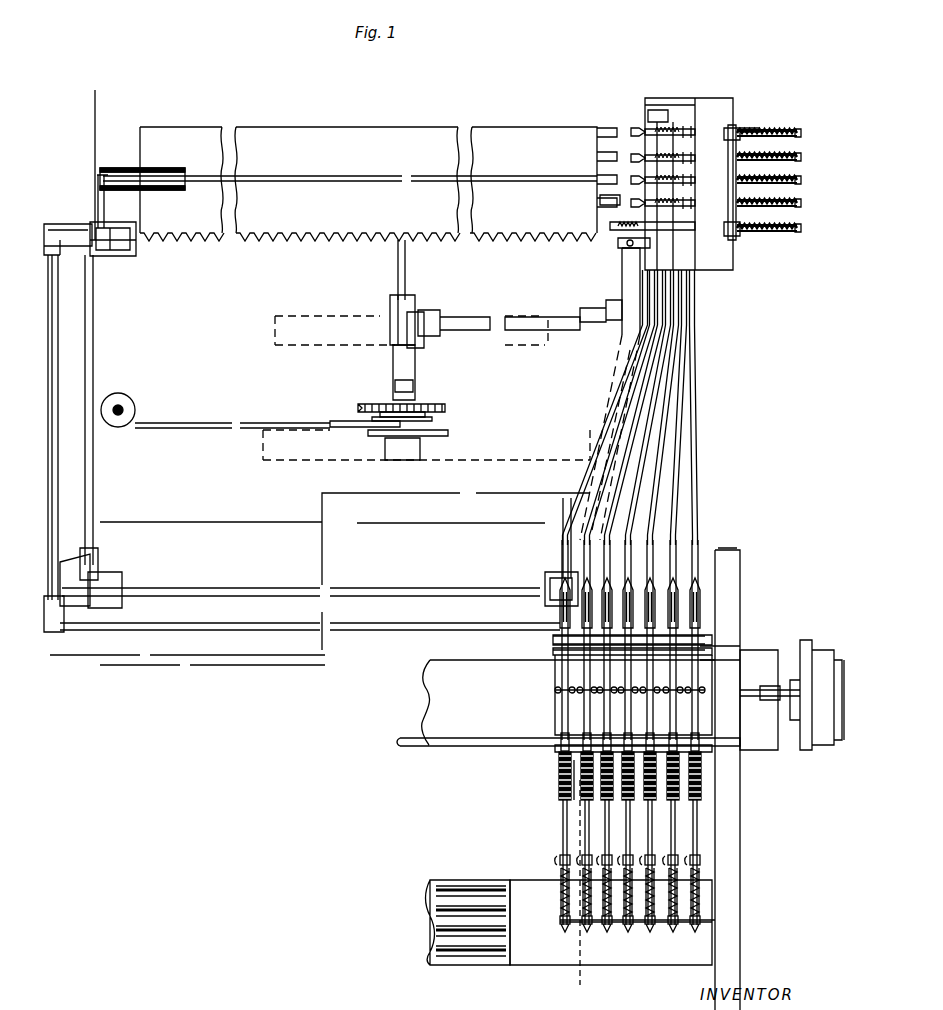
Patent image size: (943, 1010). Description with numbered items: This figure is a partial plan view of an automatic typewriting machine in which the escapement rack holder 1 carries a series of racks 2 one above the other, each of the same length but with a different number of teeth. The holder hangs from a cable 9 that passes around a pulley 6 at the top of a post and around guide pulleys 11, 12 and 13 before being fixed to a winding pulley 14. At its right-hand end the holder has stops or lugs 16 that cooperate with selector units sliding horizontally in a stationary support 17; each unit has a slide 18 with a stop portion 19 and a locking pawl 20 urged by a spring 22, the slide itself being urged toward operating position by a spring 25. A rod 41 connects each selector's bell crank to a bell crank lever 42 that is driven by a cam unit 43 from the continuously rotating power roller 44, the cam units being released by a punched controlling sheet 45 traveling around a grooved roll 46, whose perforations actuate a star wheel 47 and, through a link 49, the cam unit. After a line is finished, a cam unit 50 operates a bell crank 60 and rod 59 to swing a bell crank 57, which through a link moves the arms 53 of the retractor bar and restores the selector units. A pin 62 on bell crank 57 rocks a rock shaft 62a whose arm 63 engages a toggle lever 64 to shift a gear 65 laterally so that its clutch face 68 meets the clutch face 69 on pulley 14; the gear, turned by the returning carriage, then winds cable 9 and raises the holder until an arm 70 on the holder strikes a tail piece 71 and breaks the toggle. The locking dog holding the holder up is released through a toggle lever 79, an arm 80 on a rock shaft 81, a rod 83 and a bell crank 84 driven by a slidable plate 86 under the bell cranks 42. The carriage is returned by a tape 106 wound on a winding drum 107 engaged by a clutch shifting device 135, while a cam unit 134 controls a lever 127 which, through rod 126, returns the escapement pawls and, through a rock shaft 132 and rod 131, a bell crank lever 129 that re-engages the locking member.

The escapement rack holder 1 is at (342, 130).
The racks 2 is at (86, 108).
The pulley 6 is at (59, 664).
The cable 9 is at (284, 178).
The guide pulley 11 is at (112, 194).
The guide pulley 12 is at (124, 400).
The guide pulley 13 is at (334, 426).
The winding pulley 14 is at (440, 433).
The stops or lugs 16 is at (612, 130).
The stationary support 17 is at (718, 102).
The slide 18 is at (672, 130).
The stop portion 19 is at (618, 206).
The locking element or pawl 20 is at (636, 132).
The spring 22 is at (660, 200).
The spring 25 is at (748, 130).
The rod 41 is at (650, 335).
The bell crank lever 42 is at (700, 680).
The cam unit 43 is at (620, 790).
The power roller 44 is at (424, 714).
The punched controlling sheet 45 is at (632, 963).
The grooved roll 46 is at (460, 880).
The star wheel 47 is at (692, 930).
The link 49 is at (592, 828).
The cam unit 50 is at (580, 788).
The arms 53 is at (628, 240).
The bell crank 57 is at (640, 268).
The rod 59 is at (628, 385).
The bell crank 60 is at (588, 664).
The pin 62 is at (610, 304).
The rock shaft 62a is at (468, 318).
The arm 63 is at (422, 357).
The toggle lever 64 is at (390, 363).
The gear 65 is at (430, 403).
The clutch face 68 is at (380, 408).
The clutch face 69 is at (382, 420).
The arm 70 is at (399, 263).
The tail piece 71 is at (395, 303).
The toggle lever 79 is at (110, 236).
The arm 80 is at (70, 222).
The rock shaft 81 is at (53, 345).
The rod 83 is at (212, 624).
The bell crank 84 is at (580, 642).
The vertically slidable plate 86 is at (704, 638).
The tape 106 is at (820, 640).
The carriage return winding drum 107 is at (838, 730).
The rod 126 is at (562, 540).
The lever 127 is at (592, 690).
The bell crank lever 129 is at (98, 215).
The rod 131 is at (92, 462).
The rock shaft 132 is at (212, 592).
The cam unit 134 is at (558, 770).
The clutch shifting device 135 is at (760, 712).